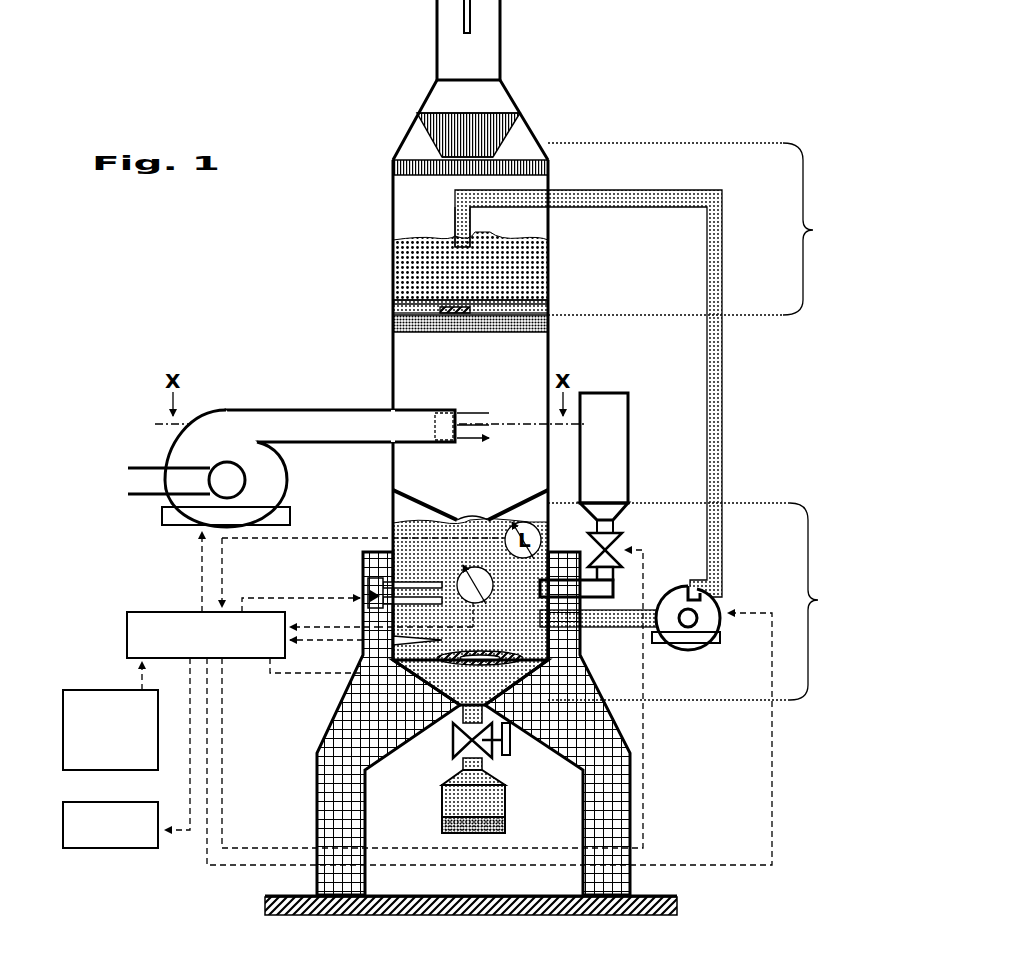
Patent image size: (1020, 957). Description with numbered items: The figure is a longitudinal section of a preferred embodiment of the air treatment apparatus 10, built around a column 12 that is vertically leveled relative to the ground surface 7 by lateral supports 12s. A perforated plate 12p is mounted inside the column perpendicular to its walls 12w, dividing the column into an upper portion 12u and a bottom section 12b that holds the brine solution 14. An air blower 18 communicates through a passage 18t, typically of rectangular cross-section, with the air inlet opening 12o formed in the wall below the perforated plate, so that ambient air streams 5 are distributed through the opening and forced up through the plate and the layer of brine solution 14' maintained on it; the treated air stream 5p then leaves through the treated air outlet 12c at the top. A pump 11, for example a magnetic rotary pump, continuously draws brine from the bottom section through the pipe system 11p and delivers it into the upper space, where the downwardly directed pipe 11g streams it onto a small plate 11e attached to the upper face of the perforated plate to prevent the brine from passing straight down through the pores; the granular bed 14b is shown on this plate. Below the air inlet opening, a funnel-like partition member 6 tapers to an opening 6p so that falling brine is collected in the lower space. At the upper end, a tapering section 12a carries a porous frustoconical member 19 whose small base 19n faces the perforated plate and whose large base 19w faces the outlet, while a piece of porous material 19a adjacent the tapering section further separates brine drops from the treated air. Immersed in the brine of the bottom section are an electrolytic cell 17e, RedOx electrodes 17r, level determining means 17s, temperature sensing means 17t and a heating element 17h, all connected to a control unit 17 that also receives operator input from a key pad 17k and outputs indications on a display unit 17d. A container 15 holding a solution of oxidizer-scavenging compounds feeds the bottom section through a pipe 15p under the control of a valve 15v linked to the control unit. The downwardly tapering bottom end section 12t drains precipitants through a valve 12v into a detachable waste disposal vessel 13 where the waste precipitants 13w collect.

The ambient air streams 5 is at (467, 412).
The treated air stream 5p is at (463, 10).
The partition member 6 is at (393, 490).
The opening 6p is at (470, 517).
The ground surface 7 is at (665, 897).
The apparatus 10 is at (717, 125).
The pump 11 is at (712, 643).
The plate 11e is at (548, 305).
The pipe 11g is at (455, 225).
The pipe system 11p is at (722, 270).
The column 12 is at (392, 237).
The tapering section 12a is at (413, 120).
The bottom section 12b is at (696, 601).
The treated air outlet 12c is at (502, 43).
The air inlet opening 12o is at (440, 410).
The perforated plate 12p is at (392, 320).
The lateral supports 12s is at (340, 828).
The bottom end section 12t is at (560, 685).
The upper portion 12u is at (694, 229).
The valve 12v is at (490, 745).
The walls 12w is at (390, 200).
The waste disposal vessel 13 is at (505, 800).
The waste precipitants 13w is at (445, 822).
The brine solution 14 is at (428, 573).
The layer of brine solution 14' is at (428, 281).
The granular bed 14b is at (548, 258).
The container 15 is at (607, 440).
The pipe 15p is at (613, 590).
The valve 15v is at (612, 542).
The control unit 17 is at (140, 612).
The display unit 17d is at (93, 848).
The electrolytic cell 17e is at (368, 582).
The heating element 17h is at (523, 660).
The key pad 17k is at (100, 690).
The RedOx electrodes 17r is at (393, 645).
The level determining means 17s is at (453, 440).
The temperature sensing means 17t is at (460, 570).
The air blower 18 is at (215, 460).
The passage 18t is at (350, 410).
The frustoconical member 19 is at (507, 147).
The piece of porous material 19a is at (520, 165).
The small base 19n is at (447, 143).
The large base 19w is at (480, 110).